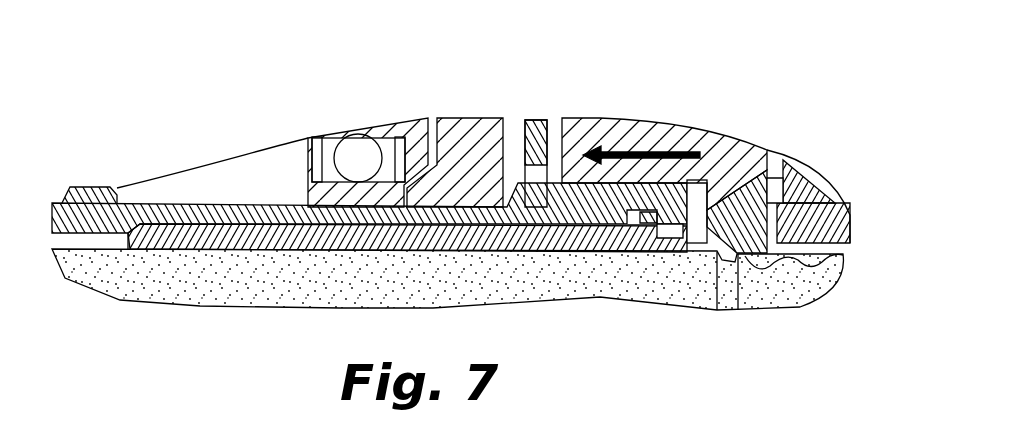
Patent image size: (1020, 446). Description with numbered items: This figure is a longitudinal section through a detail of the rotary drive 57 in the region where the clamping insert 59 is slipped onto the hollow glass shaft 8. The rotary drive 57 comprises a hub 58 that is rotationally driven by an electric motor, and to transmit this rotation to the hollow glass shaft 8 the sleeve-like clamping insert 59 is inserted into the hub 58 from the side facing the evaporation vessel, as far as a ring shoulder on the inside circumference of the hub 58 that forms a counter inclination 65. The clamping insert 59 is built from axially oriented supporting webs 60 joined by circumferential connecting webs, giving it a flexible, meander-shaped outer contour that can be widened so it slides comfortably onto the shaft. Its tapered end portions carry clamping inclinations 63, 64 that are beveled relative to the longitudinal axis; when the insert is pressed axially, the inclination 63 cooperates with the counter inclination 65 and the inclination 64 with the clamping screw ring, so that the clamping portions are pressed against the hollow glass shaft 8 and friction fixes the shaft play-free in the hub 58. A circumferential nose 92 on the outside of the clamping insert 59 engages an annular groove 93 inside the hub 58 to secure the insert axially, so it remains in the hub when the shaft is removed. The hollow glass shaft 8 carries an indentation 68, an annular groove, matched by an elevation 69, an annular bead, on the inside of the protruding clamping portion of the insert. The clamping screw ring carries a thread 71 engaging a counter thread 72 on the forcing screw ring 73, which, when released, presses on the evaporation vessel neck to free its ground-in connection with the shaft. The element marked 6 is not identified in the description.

The lock 6 is at (825, 256).
The hollow glass shaft 8 is at (226, 282).
The rotary drive 57 is at (481, 96).
The hub 58 is at (272, 204).
The clamping insert 59 is at (535, 249).
The supporting webs 60 is at (437, 251).
The clamping inclination 63 is at (128, 215).
The clamping inclination 64 is at (741, 222).
The counter inclination 65 is at (133, 240).
The indentation 68 is at (734, 297).
The elevation 69 is at (735, 262).
The thread 71 is at (828, 212).
The counter thread 72 is at (804, 208).
The forcing screw ring 73 is at (803, 180).
The circumferential nose 92 is at (647, 220).
The annular groove 93 is at (628, 237).